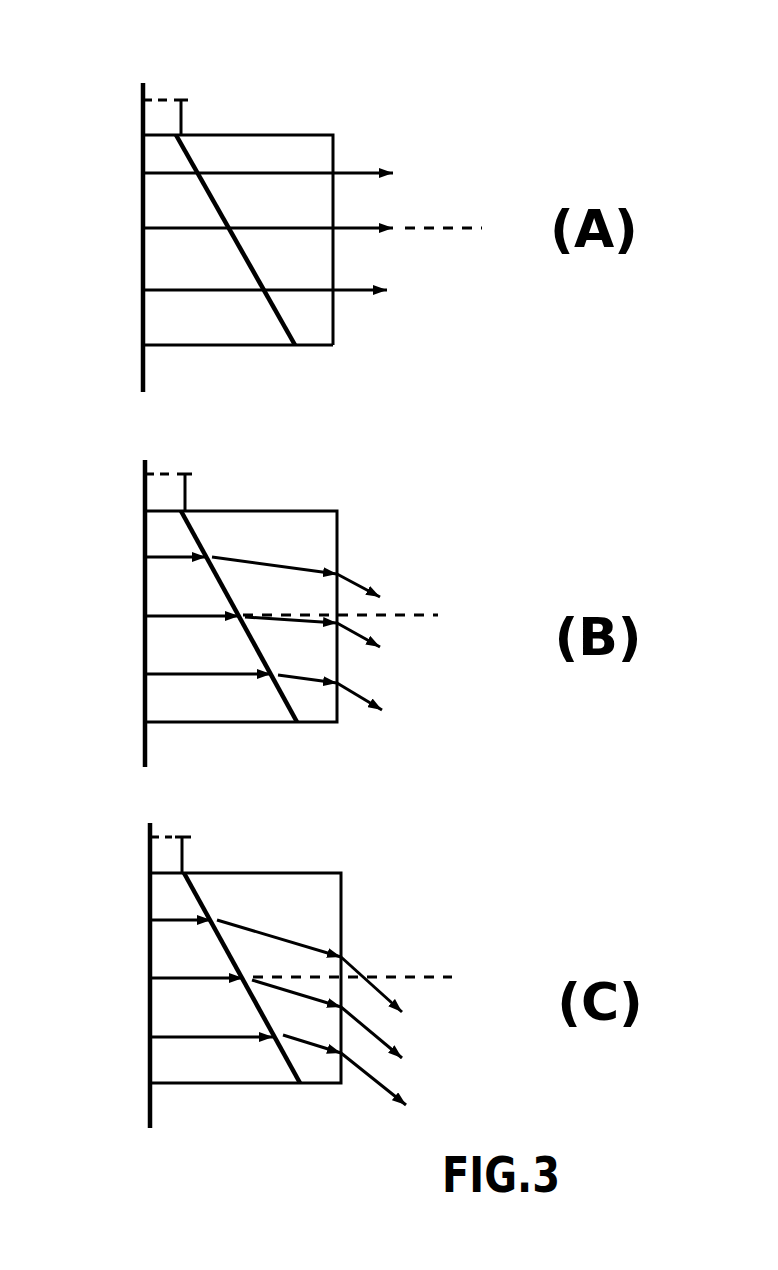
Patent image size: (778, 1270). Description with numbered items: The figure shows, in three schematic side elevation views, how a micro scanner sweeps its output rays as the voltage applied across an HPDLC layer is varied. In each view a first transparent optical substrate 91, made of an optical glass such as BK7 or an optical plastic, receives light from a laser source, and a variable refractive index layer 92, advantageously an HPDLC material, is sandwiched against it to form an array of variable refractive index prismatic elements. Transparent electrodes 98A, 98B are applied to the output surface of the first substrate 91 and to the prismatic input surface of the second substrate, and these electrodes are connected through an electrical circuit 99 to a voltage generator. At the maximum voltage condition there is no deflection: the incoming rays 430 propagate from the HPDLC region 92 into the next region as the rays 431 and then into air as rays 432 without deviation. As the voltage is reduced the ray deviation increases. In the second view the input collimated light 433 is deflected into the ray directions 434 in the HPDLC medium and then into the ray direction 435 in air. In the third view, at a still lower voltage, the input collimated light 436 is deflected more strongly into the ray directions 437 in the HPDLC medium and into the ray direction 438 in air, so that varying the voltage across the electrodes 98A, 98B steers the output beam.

In FIG. 3A, the first transparent optical substrate 91 is at (333, 135).
In FIG. 3A, the variable refractive index layer 92 is at (235, 347).
In FIG. 3A, the transparent electrode 98A is at (143, 372).
In FIG. 3A, the transparent electrode 98B is at (209, 197).
In FIG. 3A, the electrical circuit 99 is at (183, 100).
In FIG. 3A, the incoming rays 430 is at (202, 288).
In FIG. 3A, the rays 431 is at (220, 173).
In FIG. 3A, the rays 432 is at (394, 171).
In FIG. 3B, the input collimated light 433 is at (208, 672).
In FIG. 3B, the ray directions 434 is at (232, 553).
In FIG. 3B, the ray direction 435 is at (383, 597).
In FIG. 3C, the input collimated light 436 is at (205, 1026).
In FIG. 3C, the ray directions 437 is at (227, 912).
In FIG. 3C, the ray direction 438 is at (383, 992).